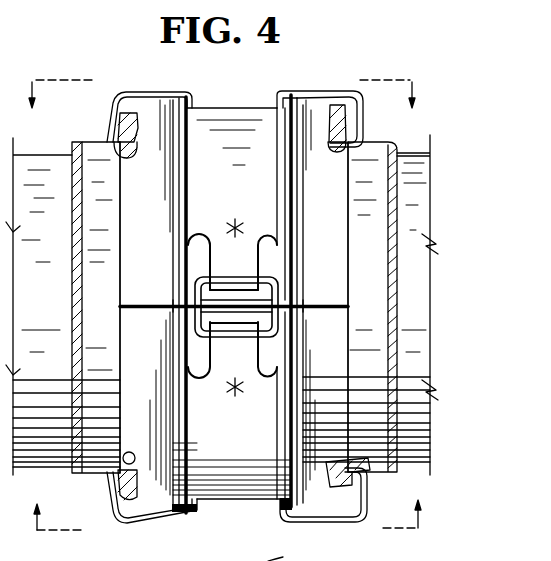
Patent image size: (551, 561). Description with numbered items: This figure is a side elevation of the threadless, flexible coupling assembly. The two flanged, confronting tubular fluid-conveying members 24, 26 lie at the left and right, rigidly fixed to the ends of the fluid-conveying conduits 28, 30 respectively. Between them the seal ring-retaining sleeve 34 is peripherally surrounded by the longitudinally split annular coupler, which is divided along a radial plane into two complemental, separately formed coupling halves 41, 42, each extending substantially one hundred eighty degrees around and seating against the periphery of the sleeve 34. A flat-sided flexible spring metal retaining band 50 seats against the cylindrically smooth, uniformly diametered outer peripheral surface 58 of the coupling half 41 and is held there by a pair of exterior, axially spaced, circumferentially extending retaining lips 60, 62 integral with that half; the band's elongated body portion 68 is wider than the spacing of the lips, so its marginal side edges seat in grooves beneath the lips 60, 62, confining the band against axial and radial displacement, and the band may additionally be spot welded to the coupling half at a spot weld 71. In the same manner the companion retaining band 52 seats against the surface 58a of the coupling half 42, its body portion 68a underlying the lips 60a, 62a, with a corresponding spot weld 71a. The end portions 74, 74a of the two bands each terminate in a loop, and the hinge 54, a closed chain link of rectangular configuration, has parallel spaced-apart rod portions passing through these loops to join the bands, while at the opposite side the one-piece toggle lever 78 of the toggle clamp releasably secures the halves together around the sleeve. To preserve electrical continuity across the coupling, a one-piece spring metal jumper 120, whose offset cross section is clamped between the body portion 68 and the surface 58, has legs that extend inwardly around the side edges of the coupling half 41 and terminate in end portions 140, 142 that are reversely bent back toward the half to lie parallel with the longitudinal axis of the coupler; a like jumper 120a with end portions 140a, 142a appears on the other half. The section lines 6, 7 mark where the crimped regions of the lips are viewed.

The section line 6- 6 is at (221, 83).
The section line 7- 7 is at (228, 529).
The fluid-conveying member 24 is at (82, 142).
The fluid-conveying member 26 is at (380, 142).
The fluid-conveying conduit 28 is at (27, 289).
The fluid-conveying conduit 30 is at (399, 289).
The seal ring-retaining sleeve 34 is at (140, 308).
The coupling half 41 is at (335, 343).
The coupling half 42 is at (128, 273).
The retaining band 50 is at (228, 500).
The retaining band 52 is at (231, 117).
The hinge 54 is at (274, 285).
The outer peripheral surface 58 is at (276, 357).
The circumferentially extending surface 58a is at (273, 256).
The retaining lip 60 is at (192, 417).
The lip 60a is at (193, 186).
The retaining lip 62 is at (280, 398).
The lip 62a is at (281, 198).
The body portion 68 is at (245, 441).
The body portion 68a is at (212, 228).
The spot weld 71 is at (229, 390).
The upper weld spot 71a is at (226, 226).
The end portion 74 is at (223, 363).
The end portion 74a is at (219, 273).
The toggle lever 78 is at (288, 550).
The electrical jumper 120 is at (161, 520).
The upper spring clip 120a is at (340, 92).
The end portion 140 is at (120, 468).
The upper left rolled edge 140a is at (133, 153).
The end portion 142 is at (365, 473).
The upper right rolled edge 142a is at (333, 153).